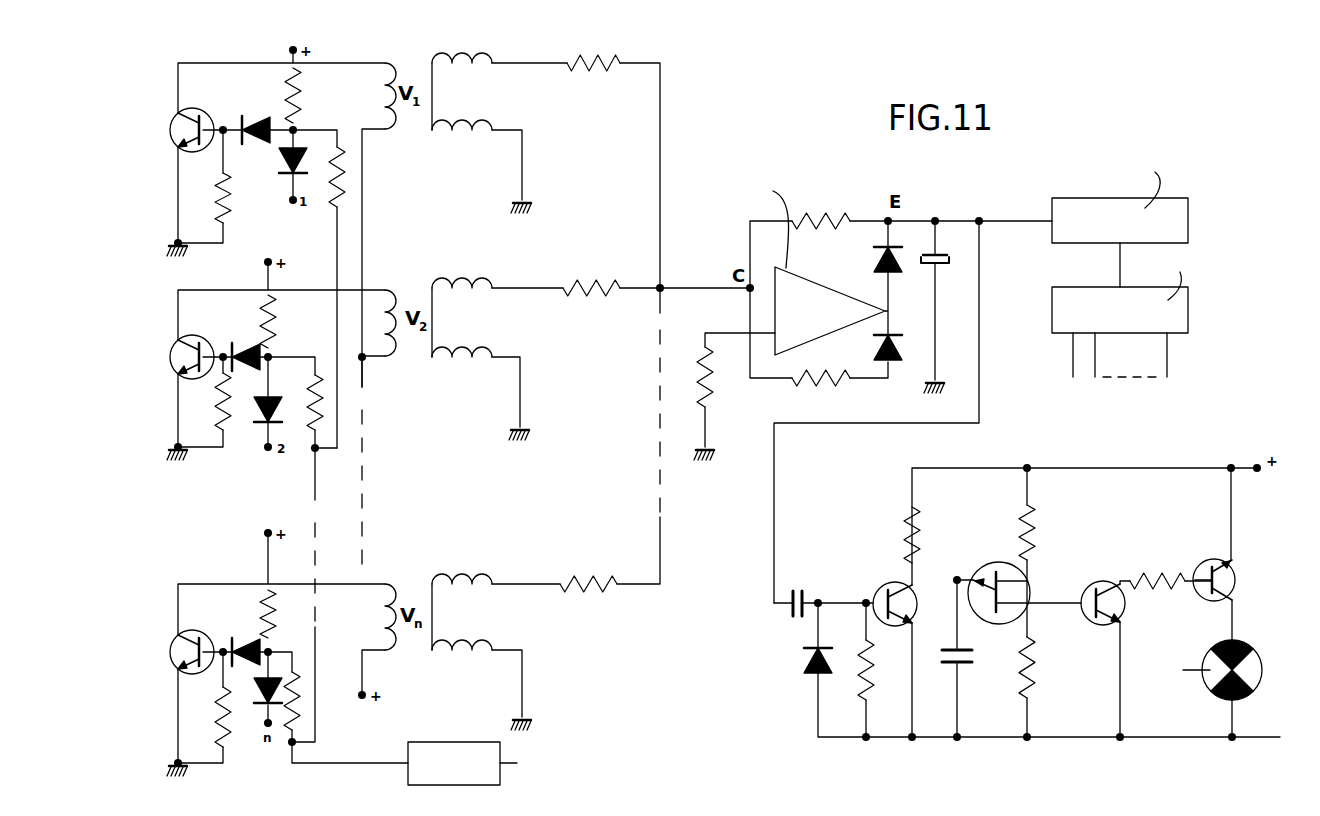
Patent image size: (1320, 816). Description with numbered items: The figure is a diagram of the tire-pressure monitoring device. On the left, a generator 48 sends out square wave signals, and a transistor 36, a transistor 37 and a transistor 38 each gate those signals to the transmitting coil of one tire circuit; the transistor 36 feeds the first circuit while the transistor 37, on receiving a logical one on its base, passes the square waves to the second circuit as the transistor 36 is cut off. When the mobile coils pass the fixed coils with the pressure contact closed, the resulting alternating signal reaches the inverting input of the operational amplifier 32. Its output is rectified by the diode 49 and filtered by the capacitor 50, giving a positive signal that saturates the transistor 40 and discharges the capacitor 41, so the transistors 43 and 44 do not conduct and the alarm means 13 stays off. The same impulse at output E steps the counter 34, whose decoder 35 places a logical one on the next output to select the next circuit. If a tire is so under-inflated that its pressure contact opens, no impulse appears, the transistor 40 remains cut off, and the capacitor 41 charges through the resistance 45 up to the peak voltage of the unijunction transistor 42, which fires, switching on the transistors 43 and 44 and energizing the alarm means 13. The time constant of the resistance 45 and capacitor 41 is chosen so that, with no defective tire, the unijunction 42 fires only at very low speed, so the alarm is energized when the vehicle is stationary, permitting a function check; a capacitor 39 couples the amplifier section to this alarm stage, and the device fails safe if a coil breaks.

The alarm means 13 is at (1256, 665).
The operational amplifier 32 is at (783, 262).
The counter 34 is at (1120, 203).
The decoder 35 is at (1130, 326).
The transistor 36 is at (207, 120).
The transistor 37 is at (206, 346).
The transistor 38 is at (206, 640).
The capacitor 39 is at (797, 591).
The transistor 40 is at (882, 585).
The capacitor 41 is at (960, 664).
The unijunction transistor 42 is at (1004, 563).
The transistor 43 is at (1120, 606).
The transistor 44 is at (1232, 575).
The resistance 45 is at (927, 535).
The generator 48 is at (515, 763).
The diode 49 is at (878, 259).
The capacitor 50 is at (952, 257).